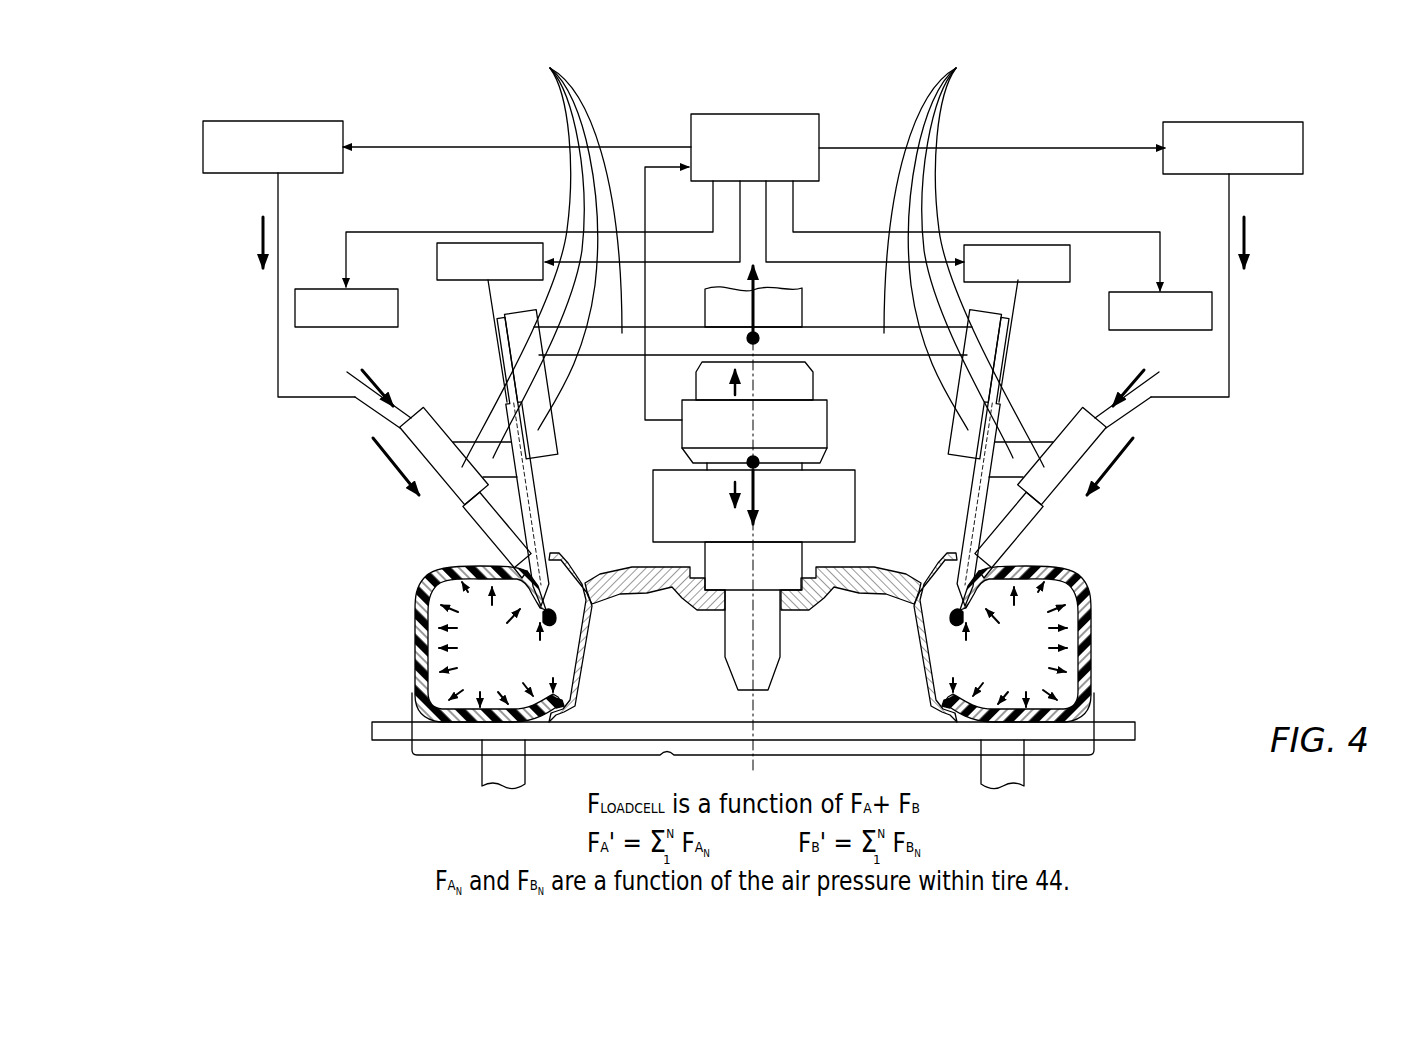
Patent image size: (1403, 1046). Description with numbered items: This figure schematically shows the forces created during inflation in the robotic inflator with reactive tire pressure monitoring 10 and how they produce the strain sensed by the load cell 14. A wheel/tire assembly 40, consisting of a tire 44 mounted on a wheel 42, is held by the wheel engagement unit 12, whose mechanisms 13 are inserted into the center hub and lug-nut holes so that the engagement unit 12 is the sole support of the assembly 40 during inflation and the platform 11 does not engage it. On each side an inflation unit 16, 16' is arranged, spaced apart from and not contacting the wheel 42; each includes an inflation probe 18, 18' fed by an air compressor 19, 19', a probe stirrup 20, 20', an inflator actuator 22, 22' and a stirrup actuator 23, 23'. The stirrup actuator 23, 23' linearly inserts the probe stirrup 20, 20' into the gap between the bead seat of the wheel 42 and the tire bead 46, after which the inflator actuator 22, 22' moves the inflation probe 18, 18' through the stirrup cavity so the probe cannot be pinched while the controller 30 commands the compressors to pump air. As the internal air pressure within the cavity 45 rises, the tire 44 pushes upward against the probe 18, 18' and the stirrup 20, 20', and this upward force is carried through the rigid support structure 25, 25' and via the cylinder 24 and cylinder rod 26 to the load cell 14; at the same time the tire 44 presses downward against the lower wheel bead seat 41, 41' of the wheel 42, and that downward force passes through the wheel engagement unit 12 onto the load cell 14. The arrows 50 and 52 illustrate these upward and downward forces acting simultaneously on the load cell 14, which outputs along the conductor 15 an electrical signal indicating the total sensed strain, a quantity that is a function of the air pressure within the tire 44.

The robotic inflator with reactive tire pressure monitoring 10 is at (288, 618).
The platform 11 is at (1140, 735).
The wheel engagement unit 12 is at (856, 491).
The mechanisms 13 is at (742, 621).
The load cell 14 is at (828, 441).
The conductor 15 is at (643, 404).
The inflation unit 16 is at (1126, 437).
The inflation unit 16' is at (379, 437).
The inflation probe 18 is at (1043, 535).
The inflation probe 18' is at (462, 535).
The air compressor 19 is at (1218, 245).
The air compressor 19' is at (289, 241).
The probe stirrup 20 is at (984, 443).
The probe stirrup 20' is at (522, 443).
The inflator actuator 22 is at (1169, 295).
The inflator actuator 22' is at (335, 291).
The stirrup actuator 23 is at (1032, 281).
The stirrup actuator 23' is at (471, 277).
The cylinder 24 is at (806, 311).
The rigid support structure 25 is at (964, 263).
The rigid support structure 25' is at (542, 260).
The cylinder rod 26 is at (814, 391).
The controller 30 is at (805, 114).
The wheel/tire assembly 40 is at (753, 741).
The lower wheel bead seat 41 is at (918, 697).
The lower wheel bead seat 41' is at (593, 697).
The wheel 42 is at (887, 584).
The tire 44 is at (1094, 621).
The cavity 45 is at (480, 660).
The tire bead 46 is at (552, 618).
The arrow 50 is at (728, 382).
The arrow 52 is at (728, 490).